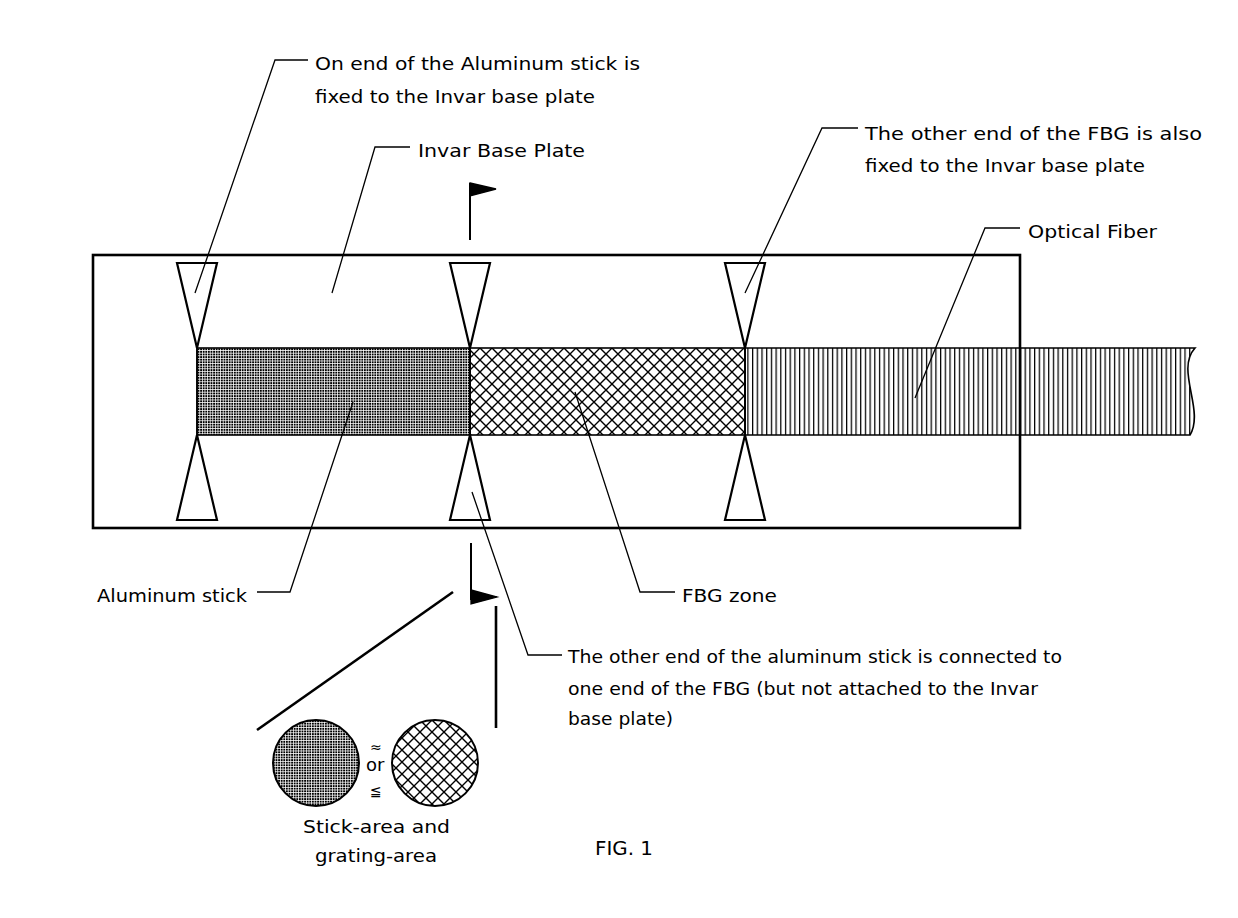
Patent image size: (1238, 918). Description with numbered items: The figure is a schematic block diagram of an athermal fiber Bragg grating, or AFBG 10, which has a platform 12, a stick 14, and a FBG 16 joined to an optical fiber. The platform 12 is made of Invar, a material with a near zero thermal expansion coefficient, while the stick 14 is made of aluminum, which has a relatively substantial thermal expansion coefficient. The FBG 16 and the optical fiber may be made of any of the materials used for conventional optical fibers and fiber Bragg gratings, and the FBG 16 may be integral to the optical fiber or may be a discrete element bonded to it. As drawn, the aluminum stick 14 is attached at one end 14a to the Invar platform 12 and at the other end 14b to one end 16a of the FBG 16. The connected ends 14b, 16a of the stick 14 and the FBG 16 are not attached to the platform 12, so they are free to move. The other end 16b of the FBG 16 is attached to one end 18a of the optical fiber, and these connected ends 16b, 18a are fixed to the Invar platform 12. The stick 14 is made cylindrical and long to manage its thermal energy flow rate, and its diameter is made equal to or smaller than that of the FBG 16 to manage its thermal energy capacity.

The AFBG 10 is at (1134, 60).
The platform 12 is at (920, 497).
The stick 14 is at (362, 348).
The one end of the stick 14a is at (197, 395).
The other end of the stick 14b is at (466, 436).
The FBG 16 is at (617, 348).
The one end of the FBG 16a is at (482, 348).
The other end of the FBG 16b is at (742, 436).
The one end of the optical fiber 18a is at (757, 348).